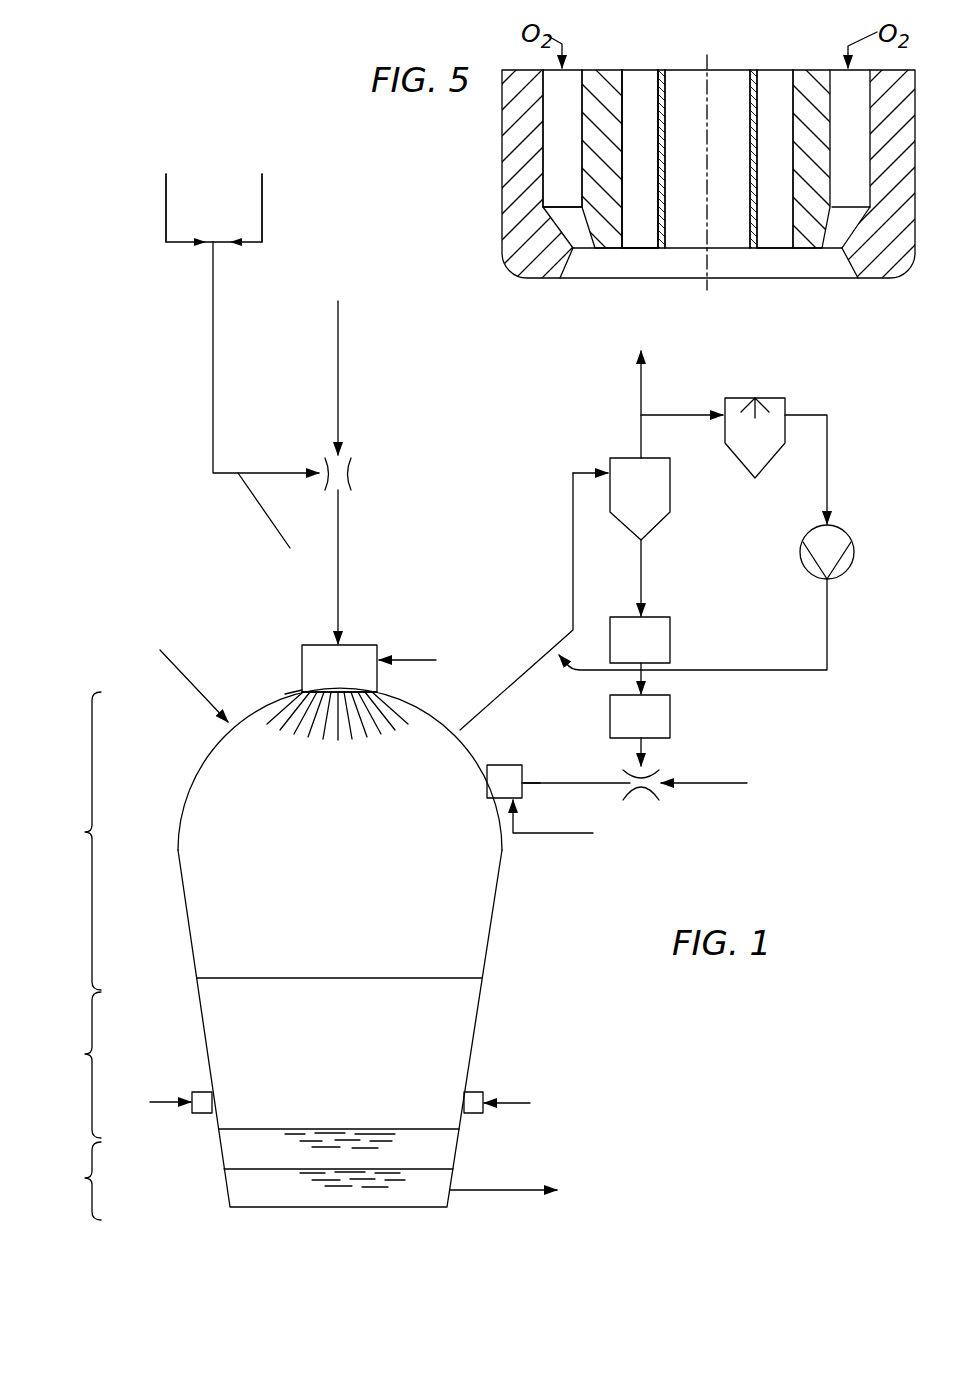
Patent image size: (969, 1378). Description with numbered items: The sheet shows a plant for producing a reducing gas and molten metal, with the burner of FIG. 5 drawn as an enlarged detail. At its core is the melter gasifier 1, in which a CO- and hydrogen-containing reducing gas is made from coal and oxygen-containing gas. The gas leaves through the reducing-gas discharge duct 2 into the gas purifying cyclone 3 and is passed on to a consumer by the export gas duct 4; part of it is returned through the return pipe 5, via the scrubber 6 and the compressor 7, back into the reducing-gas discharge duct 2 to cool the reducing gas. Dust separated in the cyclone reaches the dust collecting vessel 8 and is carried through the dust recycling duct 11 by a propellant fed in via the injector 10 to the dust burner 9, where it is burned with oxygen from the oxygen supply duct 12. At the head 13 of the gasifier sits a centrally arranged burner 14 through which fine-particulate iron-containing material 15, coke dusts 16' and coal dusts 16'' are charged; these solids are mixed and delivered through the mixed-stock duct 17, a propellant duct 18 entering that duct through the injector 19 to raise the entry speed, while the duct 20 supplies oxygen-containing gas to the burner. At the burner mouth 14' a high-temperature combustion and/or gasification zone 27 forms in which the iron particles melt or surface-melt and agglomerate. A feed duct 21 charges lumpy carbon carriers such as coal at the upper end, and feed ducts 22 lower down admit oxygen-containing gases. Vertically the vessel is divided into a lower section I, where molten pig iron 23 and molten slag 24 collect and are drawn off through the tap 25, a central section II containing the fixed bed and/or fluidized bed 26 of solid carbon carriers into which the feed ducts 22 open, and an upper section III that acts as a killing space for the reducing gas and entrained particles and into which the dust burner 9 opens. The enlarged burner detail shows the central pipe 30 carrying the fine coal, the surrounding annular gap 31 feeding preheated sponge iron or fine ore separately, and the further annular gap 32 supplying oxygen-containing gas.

In FIG. 1, the melter gasifier 1 is at (494, 918).
In FIG. 1, the reducing-gas discharge duct 2 is at (573, 515).
In FIG. 1, the gas purifying cyclone 3 is at (665, 520).
In FIG. 1, the export gas duct 4 is at (643, 377).
In FIG. 1, the return pipe 5 is at (828, 452).
In FIG. 1, the scrubber 6 is at (786, 400).
In FIG. 1, the compressor 7 is at (842, 578).
In FIG. 1, the dust collecting vessel 8 is at (649, 654).
In FIG. 1, the dust burner 9 is at (503, 772).
In FIG. 1, the injector 10 is at (642, 796).
In FIG. 1, the dust recycling duct 11 is at (575, 780).
In FIG. 1, the oxygen supply duct 12 is at (577, 838).
In FIG. 1, the head 13 is at (286, 689).
In FIG. 5, the burner 14 is at (619, 172).
In FIG. 1, the burner 14 is at (373, 651).
In FIG. 5, the burner mouth 14' is at (707, 287).
In FIG. 1, the burner mouth 14' is at (339, 738).
In FIG. 5, the fine-particulate iron-containing material 15 is at (638, 68).
In FIG. 1, the fine-particulate iron-containing material 15 is at (167, 198).
In FIG. 1, the coke dusts 16' is at (271, 210).
In FIG. 5, the coal dusts 16'' is at (707, 133).
In FIG. 1, the coal dusts 16'' is at (272, 208).
In FIG. 1, the mixed-stock duct 17 is at (337, 566).
In FIG. 1, the propellant duct 18 is at (339, 364).
In FIG. 1, the injector 19 is at (352, 477).
In FIG. 1, the duct 20 is at (424, 658).
In FIG. 1, the feed duct 21 is at (183, 678).
In FIG. 1, the feed ducts 22 is at (203, 1093).
In FIG. 1, the molten pig iron 23 is at (418, 1193).
In FIG. 1, the molten slag 24 is at (405, 1148).
In FIG. 1, the tap 25 is at (497, 1190).
In FIG. 1, the fixed bed and/or fluidized bed 26 is at (347, 1056).
In FIG. 1, the high-temperature combustion and/or gasification zone 27 is at (305, 723).
In FIG. 5, the central pipe 30 is at (663, 121).
In FIG. 5, the annular gap 31 is at (649, 124).
In FIG. 5, the further annular gap 32 is at (572, 124).
In FIG. 1, the lower section I is at (80, 1181).
In FIG. 1, the central section II is at (77, 1065).
In FIG. 1, the upper section III is at (74, 841).